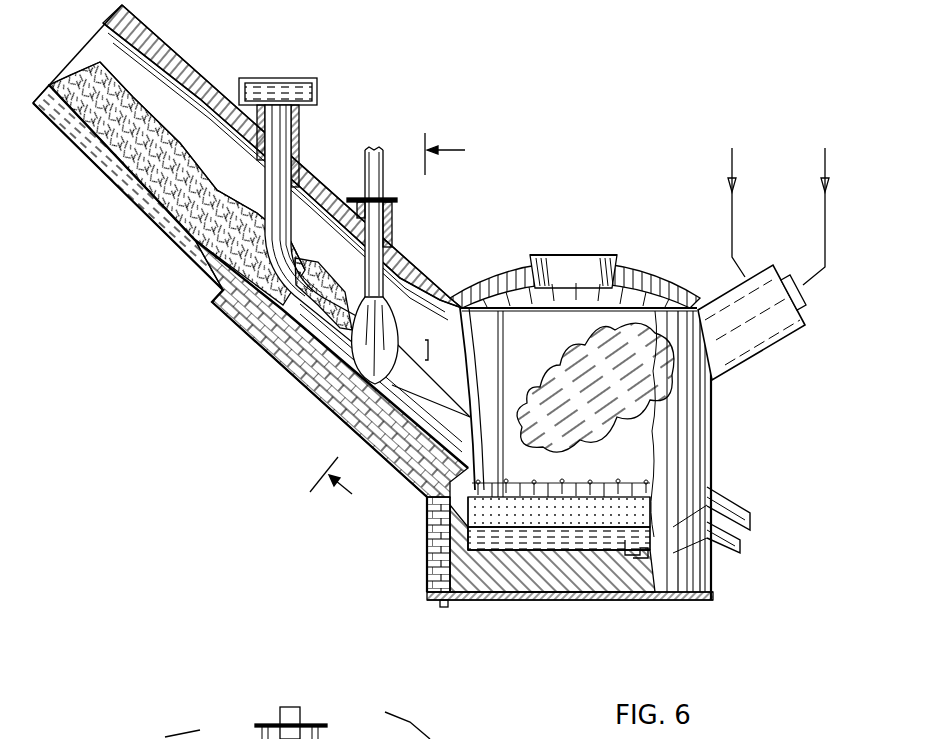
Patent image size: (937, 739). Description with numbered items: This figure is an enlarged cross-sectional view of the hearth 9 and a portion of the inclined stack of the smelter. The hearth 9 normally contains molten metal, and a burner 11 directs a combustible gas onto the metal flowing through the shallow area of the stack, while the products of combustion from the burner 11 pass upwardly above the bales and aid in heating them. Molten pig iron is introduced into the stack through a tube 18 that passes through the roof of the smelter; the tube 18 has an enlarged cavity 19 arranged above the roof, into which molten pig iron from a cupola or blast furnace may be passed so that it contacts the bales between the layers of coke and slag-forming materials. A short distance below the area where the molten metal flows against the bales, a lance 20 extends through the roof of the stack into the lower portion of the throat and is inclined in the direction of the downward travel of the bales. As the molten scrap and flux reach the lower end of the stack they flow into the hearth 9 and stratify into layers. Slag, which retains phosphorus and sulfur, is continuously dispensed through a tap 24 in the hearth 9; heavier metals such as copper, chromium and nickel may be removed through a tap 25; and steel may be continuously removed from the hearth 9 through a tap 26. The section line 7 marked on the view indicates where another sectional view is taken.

The section line 7- 7 is at (387, 321).
The hearth 9 is at (713, 410).
The burner 11 is at (780, 338).
The tube 18 is at (299, 140).
The enlarged cavity 19 is at (240, 82).
The lance 20 is at (390, 232).
The tap 24 is at (724, 502).
The tap 25 is at (632, 560).
The tap 26 is at (738, 553).